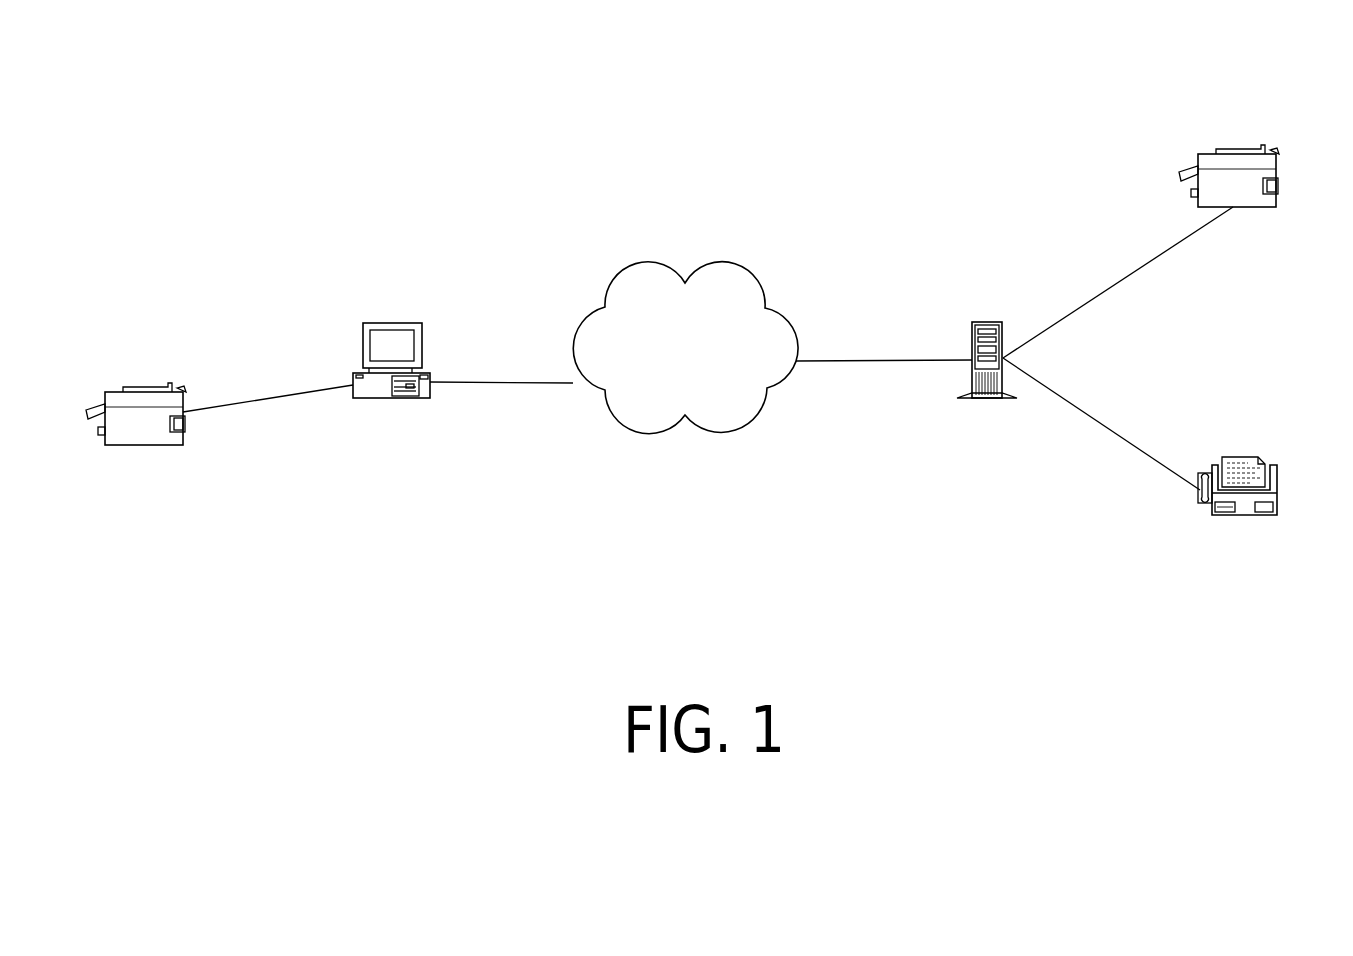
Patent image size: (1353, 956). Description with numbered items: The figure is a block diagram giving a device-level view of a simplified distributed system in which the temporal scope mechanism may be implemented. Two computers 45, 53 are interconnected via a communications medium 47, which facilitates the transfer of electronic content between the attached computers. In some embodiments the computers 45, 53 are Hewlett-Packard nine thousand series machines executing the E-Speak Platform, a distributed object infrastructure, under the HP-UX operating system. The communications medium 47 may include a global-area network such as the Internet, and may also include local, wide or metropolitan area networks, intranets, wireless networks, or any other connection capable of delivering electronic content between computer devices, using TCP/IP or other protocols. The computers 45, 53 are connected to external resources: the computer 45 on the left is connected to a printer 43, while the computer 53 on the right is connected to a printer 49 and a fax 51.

The printer 43 is at (172, 381).
The computer 45 is at (408, 322).
The communications medium 47 is at (723, 265).
The printer 49 is at (1264, 147).
The fax 51 is at (1275, 462).
The computer 53 is at (1000, 322).